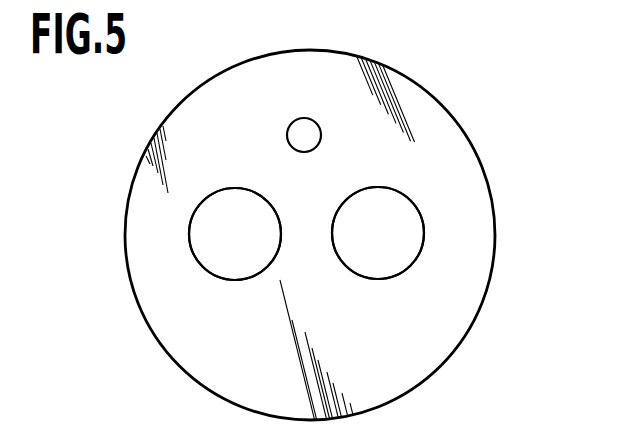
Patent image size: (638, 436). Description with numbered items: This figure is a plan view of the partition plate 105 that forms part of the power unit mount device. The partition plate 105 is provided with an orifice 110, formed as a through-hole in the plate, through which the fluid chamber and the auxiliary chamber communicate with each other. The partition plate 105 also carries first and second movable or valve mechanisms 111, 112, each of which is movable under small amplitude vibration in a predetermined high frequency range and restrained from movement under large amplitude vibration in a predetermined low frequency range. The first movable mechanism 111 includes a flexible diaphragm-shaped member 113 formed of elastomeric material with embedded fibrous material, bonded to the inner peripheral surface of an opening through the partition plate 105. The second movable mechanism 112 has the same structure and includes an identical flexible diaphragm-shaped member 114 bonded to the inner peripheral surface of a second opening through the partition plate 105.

The partition plate 105 is at (474, 142).
The orifice 110 is at (306, 128).
The first movable mechanism 111 is at (187, 224).
The second movable mechanism 112 is at (428, 229).
The flexible diaphragm-shaped member 113 is at (198, 243).
The flexible diaphragm-shaped member 114 is at (411, 251).